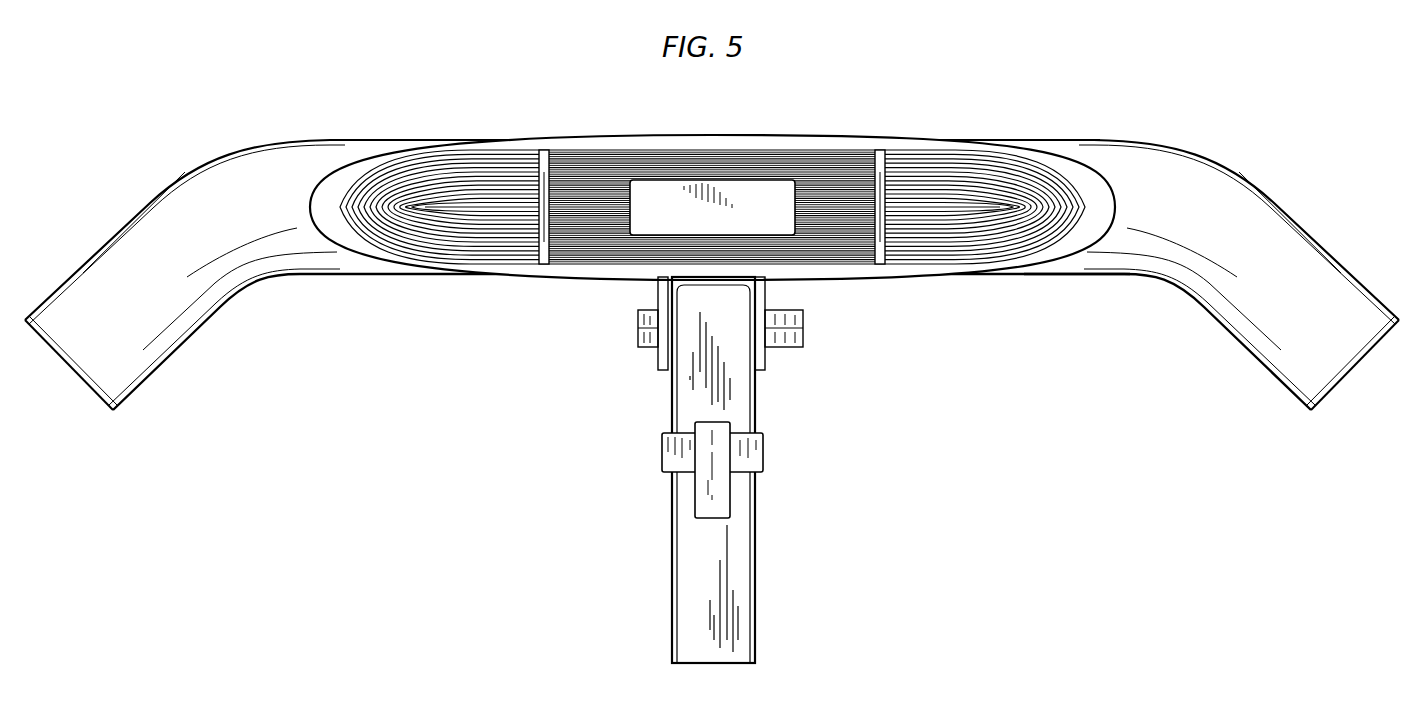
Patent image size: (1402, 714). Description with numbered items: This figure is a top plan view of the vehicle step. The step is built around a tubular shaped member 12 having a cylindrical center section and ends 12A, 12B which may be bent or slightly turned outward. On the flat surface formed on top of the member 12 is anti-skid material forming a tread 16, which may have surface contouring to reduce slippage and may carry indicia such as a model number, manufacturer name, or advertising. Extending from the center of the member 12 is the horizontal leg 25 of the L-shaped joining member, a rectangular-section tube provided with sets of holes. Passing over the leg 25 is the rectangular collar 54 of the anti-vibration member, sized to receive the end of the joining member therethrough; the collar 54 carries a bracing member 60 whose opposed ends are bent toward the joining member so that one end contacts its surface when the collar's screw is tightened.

The tubular shaped member 12 is at (712, 250).
The end of tubular member 12A is at (180, 175).
The end of tubular member 12B is at (1250, 175).
The tread 16 is at (918, 195).
The horizontal leg 25 is at (737, 565).
The collar 54 is at (752, 463).
The bracing member 60 is at (705, 443).